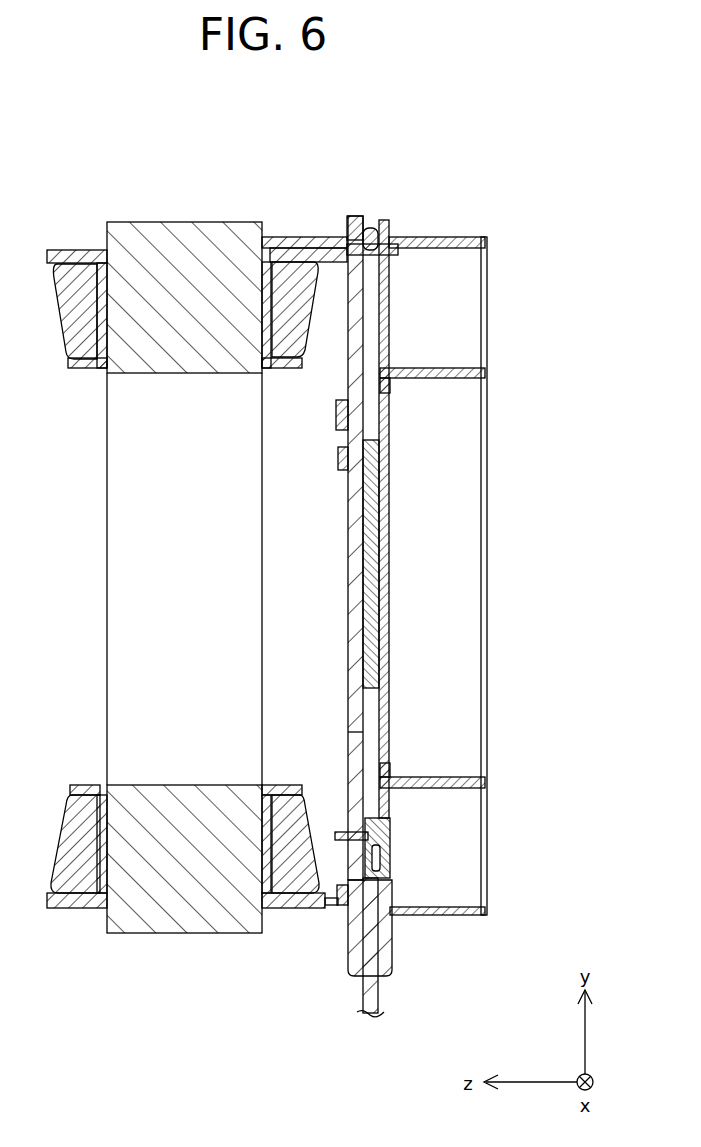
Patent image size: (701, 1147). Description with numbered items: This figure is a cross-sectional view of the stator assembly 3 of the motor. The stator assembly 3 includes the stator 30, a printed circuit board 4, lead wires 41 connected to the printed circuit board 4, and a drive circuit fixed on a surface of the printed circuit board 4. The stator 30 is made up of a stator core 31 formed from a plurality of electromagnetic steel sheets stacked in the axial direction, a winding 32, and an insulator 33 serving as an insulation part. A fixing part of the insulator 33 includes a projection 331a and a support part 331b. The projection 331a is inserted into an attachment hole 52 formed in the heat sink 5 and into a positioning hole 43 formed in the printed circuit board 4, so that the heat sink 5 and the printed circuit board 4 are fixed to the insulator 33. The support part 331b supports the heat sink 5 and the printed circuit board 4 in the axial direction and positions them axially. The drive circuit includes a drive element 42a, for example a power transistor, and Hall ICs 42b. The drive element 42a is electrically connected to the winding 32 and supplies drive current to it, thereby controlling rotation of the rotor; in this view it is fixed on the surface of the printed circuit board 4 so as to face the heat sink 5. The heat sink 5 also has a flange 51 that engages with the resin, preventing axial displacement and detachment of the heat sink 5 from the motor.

The stator assembly 3 is at (372, 131).
The stator 30 is at (195, 180).
The stator core 31 is at (176, 258).
The winding 32 is at (90, 302).
The insulator 33 is at (78, 256).
The projection 331a is at (392, 253).
The support part 331b is at (350, 258).
The printed circuit board 4 is at (352, 215).
The lead wires 41 is at (378, 992).
The drive element 42a is at (378, 462).
The Hall ICs 42b is at (336, 418).
The positioning hole 43 is at (347, 240).
The heat sink 5 is at (486, 557).
The flange 51 is at (388, 236).
The attachment hole 52 is at (410, 237).